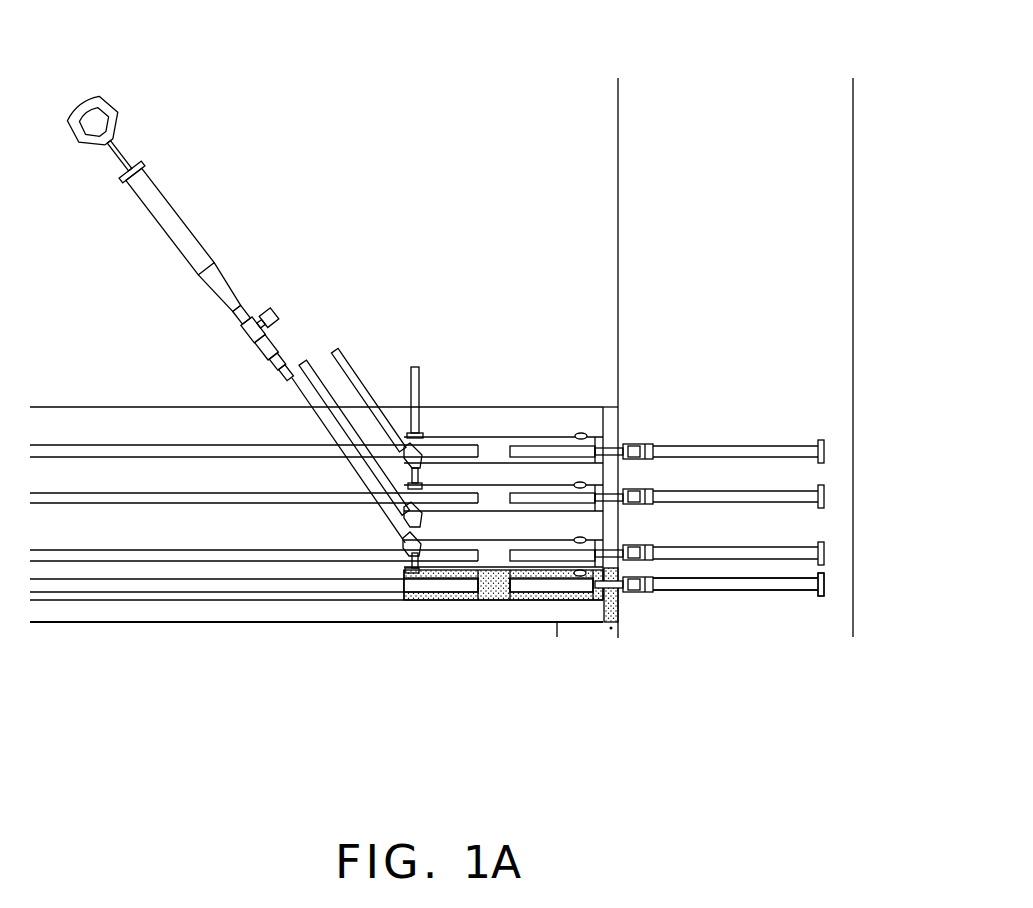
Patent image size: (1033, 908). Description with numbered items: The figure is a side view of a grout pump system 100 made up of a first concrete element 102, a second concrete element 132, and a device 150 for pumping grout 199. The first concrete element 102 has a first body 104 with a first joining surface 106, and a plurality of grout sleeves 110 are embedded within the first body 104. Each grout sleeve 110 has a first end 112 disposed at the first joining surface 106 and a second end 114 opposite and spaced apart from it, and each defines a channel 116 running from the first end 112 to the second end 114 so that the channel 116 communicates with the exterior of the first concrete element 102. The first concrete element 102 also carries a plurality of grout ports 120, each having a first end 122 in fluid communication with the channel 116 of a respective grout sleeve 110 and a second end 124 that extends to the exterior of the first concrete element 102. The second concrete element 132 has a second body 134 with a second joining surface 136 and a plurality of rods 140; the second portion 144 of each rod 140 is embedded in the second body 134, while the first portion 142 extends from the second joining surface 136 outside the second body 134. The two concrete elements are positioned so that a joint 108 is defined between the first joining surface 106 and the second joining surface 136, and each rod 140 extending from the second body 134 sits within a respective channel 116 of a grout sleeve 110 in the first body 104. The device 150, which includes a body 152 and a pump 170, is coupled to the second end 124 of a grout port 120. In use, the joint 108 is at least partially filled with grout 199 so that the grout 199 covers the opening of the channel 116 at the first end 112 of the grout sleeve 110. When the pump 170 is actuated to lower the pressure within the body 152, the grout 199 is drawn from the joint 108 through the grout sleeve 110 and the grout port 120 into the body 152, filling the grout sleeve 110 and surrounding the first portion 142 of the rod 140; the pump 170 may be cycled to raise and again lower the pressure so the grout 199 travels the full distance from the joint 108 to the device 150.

The system 100 is at (362, 84).
The first concrete element 102 is at (260, 668).
The first body 104 is at (340, 608).
The first joining surface 106 is at (600, 403).
The joint 108 is at (608, 428).
The grout sleeves 110 is at (497, 600).
The first end 112 is at (600, 600).
The second end 114 is at (413, 600).
The channel 116 is at (490, 588).
The grout ports 120 is at (340, 432).
The first end 122 is at (419, 572).
The second end 124 is at (298, 380).
The second concrete element 132 is at (908, 350).
The second body 134 is at (829, 296).
The second joining surface 136 is at (617, 472).
The rods 140 is at (688, 594).
The first portion 142 is at (533, 595).
The second portion 144 is at (787, 593).
The device 150 is at (267, 239).
The body 152 is at (264, 308).
The pump 170 is at (175, 205).
The grout 199 is at (612, 607).